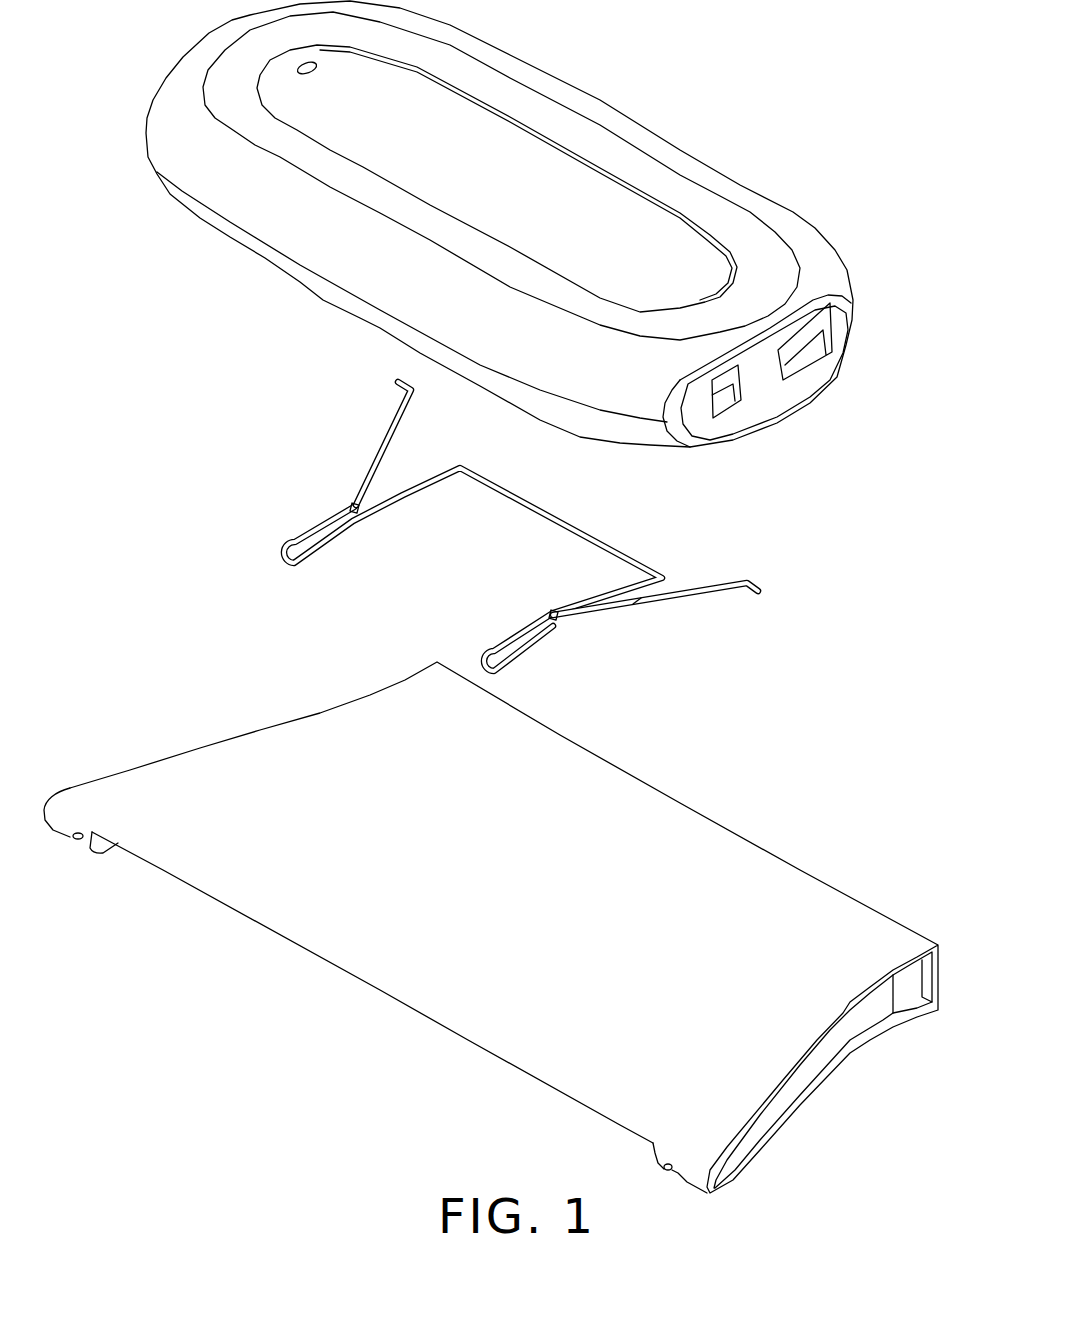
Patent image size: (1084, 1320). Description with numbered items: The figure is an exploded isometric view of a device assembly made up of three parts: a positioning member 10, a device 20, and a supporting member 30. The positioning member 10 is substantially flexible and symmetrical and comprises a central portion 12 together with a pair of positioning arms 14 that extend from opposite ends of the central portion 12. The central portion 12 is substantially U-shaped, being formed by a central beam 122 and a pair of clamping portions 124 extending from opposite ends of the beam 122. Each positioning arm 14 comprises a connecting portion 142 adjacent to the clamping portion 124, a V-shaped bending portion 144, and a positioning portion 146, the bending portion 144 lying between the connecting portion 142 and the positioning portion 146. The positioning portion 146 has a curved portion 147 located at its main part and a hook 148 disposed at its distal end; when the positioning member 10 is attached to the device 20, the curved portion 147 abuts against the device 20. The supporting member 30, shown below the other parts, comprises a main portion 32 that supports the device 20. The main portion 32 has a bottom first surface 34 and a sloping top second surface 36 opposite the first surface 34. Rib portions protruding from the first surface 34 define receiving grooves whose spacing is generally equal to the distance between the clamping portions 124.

The positioning member 10 is at (578, 537).
The central portion 12 is at (473, 569).
The positioning arms 14 is at (603, 537).
The device 20 is at (628, 105).
The supporting member 30 is at (491, 927).
The main portion 32 is at (372, 987).
The first surface 34 is at (241, 920).
The second surface 36 is at (347, 916).
The central beam 122 is at (547, 517).
The clamping portions 124 is at (620, 587).
The connecting portion 142 is at (537, 630).
The bending portion 144 is at (567, 622).
The positioning portion 146 is at (713, 593).
The curved portion 147 is at (637, 600).
The hook 148 is at (806, 582).